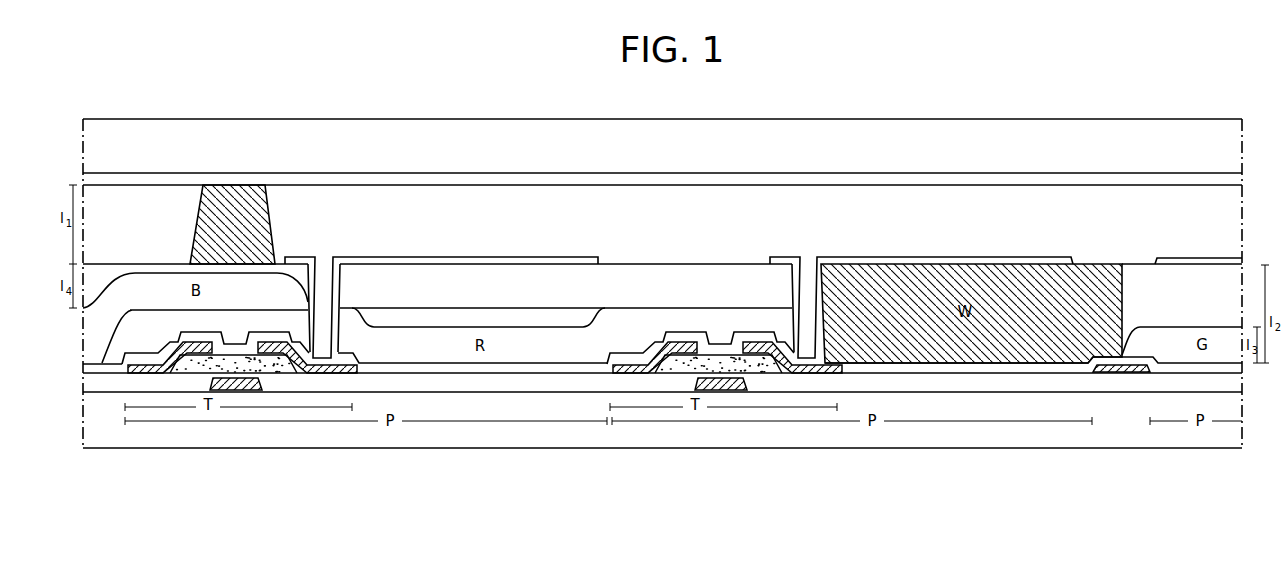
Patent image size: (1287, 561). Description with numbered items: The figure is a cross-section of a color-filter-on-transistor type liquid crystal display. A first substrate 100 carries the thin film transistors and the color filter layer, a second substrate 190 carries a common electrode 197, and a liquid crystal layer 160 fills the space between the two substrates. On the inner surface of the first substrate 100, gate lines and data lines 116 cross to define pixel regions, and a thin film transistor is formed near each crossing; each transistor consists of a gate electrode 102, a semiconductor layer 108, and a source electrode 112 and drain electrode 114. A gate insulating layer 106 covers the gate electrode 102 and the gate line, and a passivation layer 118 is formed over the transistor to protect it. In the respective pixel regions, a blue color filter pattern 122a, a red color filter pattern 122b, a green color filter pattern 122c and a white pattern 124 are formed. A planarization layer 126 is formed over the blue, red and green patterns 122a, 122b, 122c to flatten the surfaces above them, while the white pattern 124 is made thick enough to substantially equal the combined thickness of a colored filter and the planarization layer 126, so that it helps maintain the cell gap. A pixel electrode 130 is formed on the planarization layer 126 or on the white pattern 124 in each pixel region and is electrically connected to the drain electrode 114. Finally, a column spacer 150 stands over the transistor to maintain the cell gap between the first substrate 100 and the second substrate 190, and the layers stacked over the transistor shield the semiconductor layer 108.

The first substrate 100 is at (1210, 446).
The gate electrode 102 is at (225, 390).
The gate insulating layer 106 is at (425, 383).
The semiconductor layer 108 is at (283, 375).
The source electrode 112 is at (140, 362).
The drain electrode 114 is at (354, 345).
The data line 116 is at (1120, 374).
The passivation layer 118 is at (566, 372).
The blue color filter pattern 122a is at (100, 305).
The red color filter pattern 122b is at (505, 340).
The green color filter pattern 122c is at (1172, 340).
The white pattern 124 is at (1025, 270).
The planarization layer 126 is at (400, 278).
The pixel electrode 130 is at (365, 258).
The column spacer 150 is at (262, 216).
The liquid crystal layer 160 is at (1222, 236).
The second substrate 190 is at (1232, 150).
The common electrode 197 is at (1117, 185).